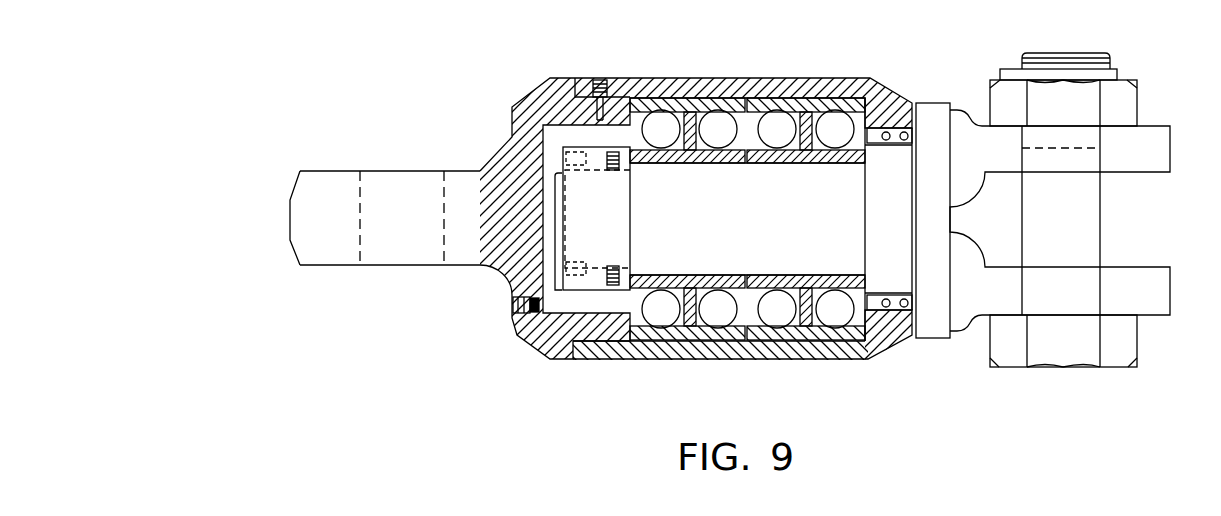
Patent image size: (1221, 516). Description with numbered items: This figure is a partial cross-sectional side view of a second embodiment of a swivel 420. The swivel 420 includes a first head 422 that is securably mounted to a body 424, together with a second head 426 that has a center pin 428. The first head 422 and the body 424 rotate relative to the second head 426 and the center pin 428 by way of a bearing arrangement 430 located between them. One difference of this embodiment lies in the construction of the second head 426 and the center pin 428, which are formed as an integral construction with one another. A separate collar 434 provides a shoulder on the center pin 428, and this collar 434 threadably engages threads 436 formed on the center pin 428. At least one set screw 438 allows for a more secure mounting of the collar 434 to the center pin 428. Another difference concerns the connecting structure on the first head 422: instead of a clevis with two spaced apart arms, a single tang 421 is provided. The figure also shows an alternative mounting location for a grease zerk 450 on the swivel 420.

The swivel 420 is at (400, 84).
The single tang 421 is at (290, 236).
The first head 422 is at (532, 348).
The body 424 is at (858, 355).
The second head 426 is at (1152, 325).
The center pin 428 is at (725, 197).
The bearing arrangement 430 is at (788, 97).
The collar 434 is at (597, 287).
The threads 436 is at (603, 192).
The set screw 438 is at (605, 160).
The grease zerk 450 is at (510, 300).